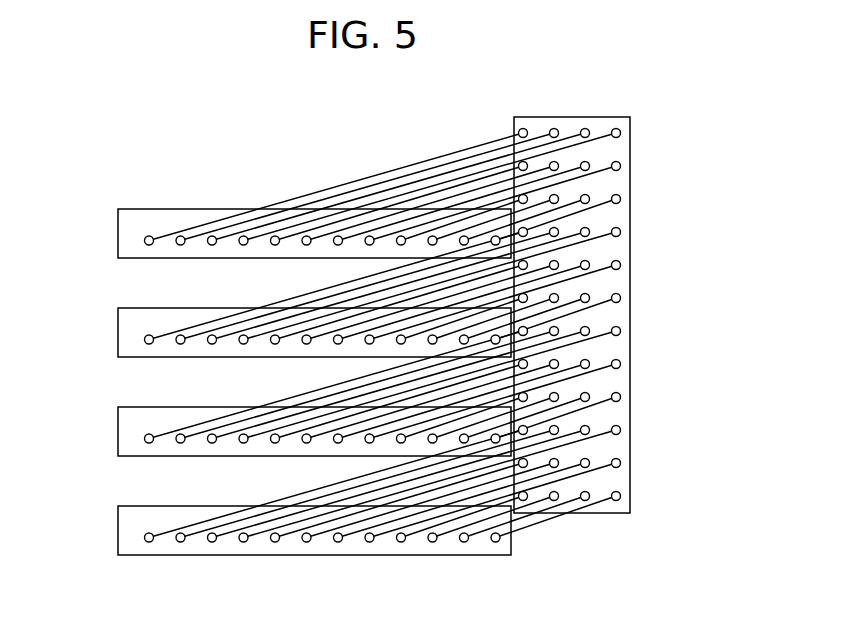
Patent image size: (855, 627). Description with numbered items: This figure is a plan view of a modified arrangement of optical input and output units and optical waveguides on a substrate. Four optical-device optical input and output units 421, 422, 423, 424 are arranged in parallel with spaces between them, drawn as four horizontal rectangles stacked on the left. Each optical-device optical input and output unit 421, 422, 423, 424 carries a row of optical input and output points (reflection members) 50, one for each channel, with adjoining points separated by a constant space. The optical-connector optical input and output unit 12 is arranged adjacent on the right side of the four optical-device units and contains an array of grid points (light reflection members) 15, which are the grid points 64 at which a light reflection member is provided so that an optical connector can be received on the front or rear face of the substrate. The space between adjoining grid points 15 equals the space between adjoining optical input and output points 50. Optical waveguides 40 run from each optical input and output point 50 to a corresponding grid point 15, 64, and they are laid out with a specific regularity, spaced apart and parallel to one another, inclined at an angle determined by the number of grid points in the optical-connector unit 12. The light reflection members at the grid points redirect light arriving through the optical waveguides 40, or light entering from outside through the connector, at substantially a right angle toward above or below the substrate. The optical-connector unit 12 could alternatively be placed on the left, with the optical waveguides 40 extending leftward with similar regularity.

The optical-connector optical input and output unit 12 is at (615, 315).
The grid points (light reflection members) 15 is at (665, 310).
The grid points 64 is at (620, 298).
The optical waveguides 40 is at (343, 184).
The optical input and output points (reflection members) 50 is at (142, 206).
The optical-device optical input and output unit 421 is at (274, 212).
The optical-device optical input and output unit 422 is at (118, 322).
The optical-device optical input and output unit 423 is at (118, 421).
The optical-device optical input and output unit 424 is at (118, 520).